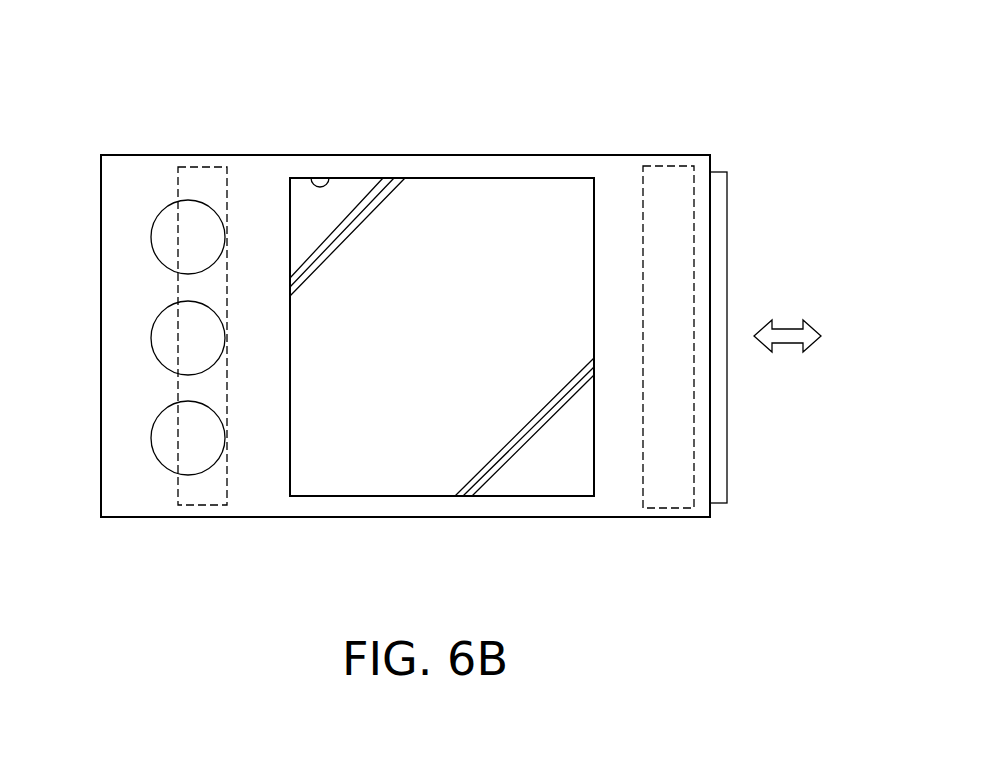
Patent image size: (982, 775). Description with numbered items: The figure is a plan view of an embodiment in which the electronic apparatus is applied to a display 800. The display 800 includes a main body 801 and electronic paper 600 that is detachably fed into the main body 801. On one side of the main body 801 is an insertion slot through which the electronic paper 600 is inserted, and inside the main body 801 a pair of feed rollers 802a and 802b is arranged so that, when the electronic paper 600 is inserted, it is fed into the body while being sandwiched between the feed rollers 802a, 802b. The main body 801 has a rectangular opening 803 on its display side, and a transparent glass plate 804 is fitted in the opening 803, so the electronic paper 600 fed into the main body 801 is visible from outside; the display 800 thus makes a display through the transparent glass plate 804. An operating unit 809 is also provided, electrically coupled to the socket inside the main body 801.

The display 800 is at (601, 66).
The main body 801 is at (256, 165).
The feed roller 802a is at (200, 160).
The feed roller 802b is at (670, 158).
The rectangular opening 803 is at (330, 190).
The transparent glass plate 804 is at (436, 192).
The operating unit 809 is at (160, 200).
The electronic paper 600 is at (727, 268).